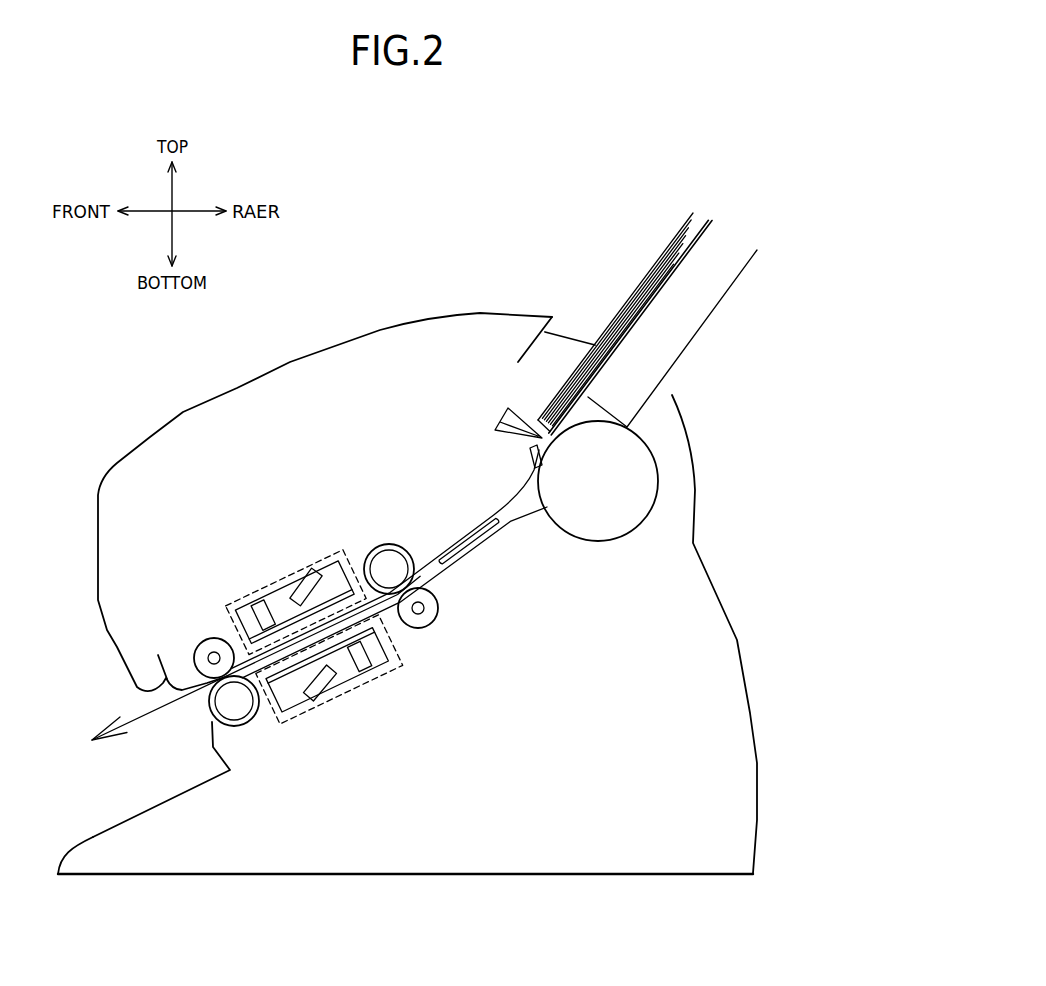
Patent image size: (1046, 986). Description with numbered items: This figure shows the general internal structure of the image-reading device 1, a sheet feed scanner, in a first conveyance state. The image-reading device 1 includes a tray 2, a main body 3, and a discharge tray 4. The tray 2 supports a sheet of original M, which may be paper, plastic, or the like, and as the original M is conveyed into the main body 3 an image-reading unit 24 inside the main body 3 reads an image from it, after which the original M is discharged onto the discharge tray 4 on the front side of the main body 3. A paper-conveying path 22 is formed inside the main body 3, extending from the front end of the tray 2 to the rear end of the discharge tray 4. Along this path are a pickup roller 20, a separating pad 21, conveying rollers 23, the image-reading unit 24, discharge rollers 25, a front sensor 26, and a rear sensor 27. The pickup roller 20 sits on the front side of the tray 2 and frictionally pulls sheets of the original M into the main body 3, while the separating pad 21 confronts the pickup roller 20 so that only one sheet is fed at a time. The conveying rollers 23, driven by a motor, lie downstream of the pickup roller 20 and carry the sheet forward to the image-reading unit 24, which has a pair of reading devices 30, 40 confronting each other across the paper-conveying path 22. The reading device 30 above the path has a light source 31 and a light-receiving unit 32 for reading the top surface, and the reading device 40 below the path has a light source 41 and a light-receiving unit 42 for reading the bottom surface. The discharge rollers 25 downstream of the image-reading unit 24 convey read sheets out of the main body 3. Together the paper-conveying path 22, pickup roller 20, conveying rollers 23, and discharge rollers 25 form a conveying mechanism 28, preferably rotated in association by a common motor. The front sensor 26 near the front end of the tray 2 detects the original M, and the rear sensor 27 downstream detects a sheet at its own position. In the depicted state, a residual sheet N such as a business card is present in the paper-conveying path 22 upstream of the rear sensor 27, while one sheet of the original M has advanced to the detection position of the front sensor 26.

The image-reading device 1 is at (411, 253).
The tray 2 is at (698, 302).
The main body 3 is at (478, 330).
The discharge tray 4 is at (135, 819).
The pickup roller 20 is at (600, 523).
The separating pad 21 is at (533, 460).
The paper-conveying path 22 is at (483, 530).
The conveying rollers 23 is at (420, 565).
The image-reading unit 24 is at (272, 590).
The discharge rollers 25 is at (234, 698).
The front sensor 26 is at (503, 420).
The rear sensor 27 is at (347, 563).
The conveying mechanism 28 is at (310, 425).
The reading device 30 is at (290, 583).
The light source 31 is at (308, 585).
The light-receiving unit 32 is at (258, 600).
The reading device 40 is at (342, 693).
The light source 41 is at (317, 703).
The light-receiving unit 42 is at (363, 663).
The original M is at (637, 292).
The residual sheet N is at (467, 573).